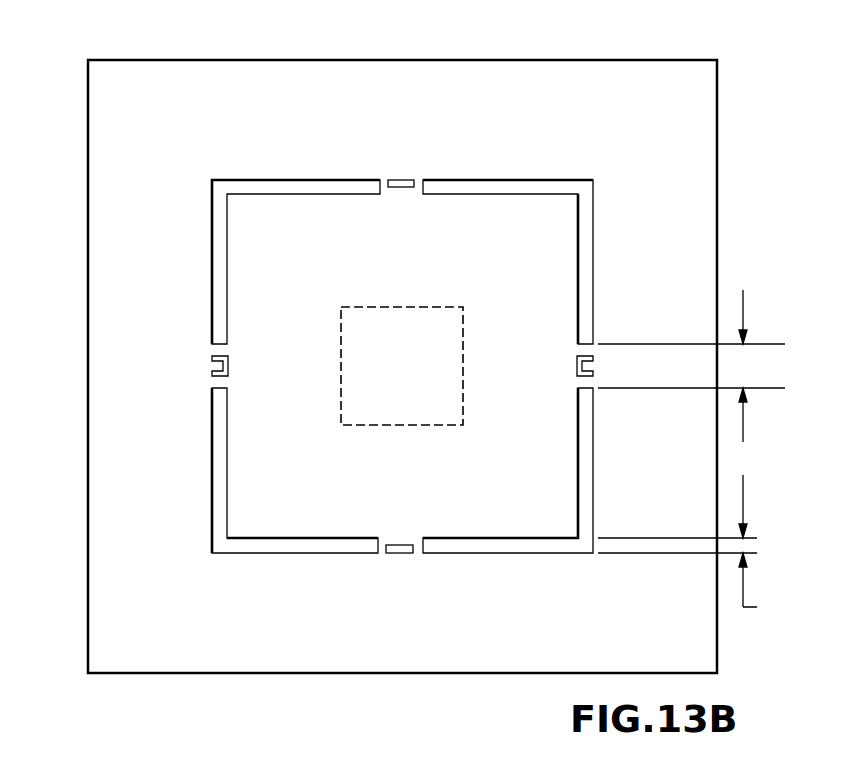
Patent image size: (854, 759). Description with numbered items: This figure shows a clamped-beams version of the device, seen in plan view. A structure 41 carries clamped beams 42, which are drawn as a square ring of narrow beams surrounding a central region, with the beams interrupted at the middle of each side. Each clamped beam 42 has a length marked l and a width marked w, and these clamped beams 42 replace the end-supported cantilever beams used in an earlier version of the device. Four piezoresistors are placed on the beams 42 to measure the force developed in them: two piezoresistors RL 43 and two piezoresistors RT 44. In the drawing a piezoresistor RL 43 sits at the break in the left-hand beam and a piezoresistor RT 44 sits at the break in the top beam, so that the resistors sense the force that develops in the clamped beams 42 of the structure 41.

The structure 41 is at (550, 293).
The clamped beams 42 is at (760, 368).
The piezoresistor RL 43 is at (211, 358).
The piezoresistor RT 44 is at (407, 178).